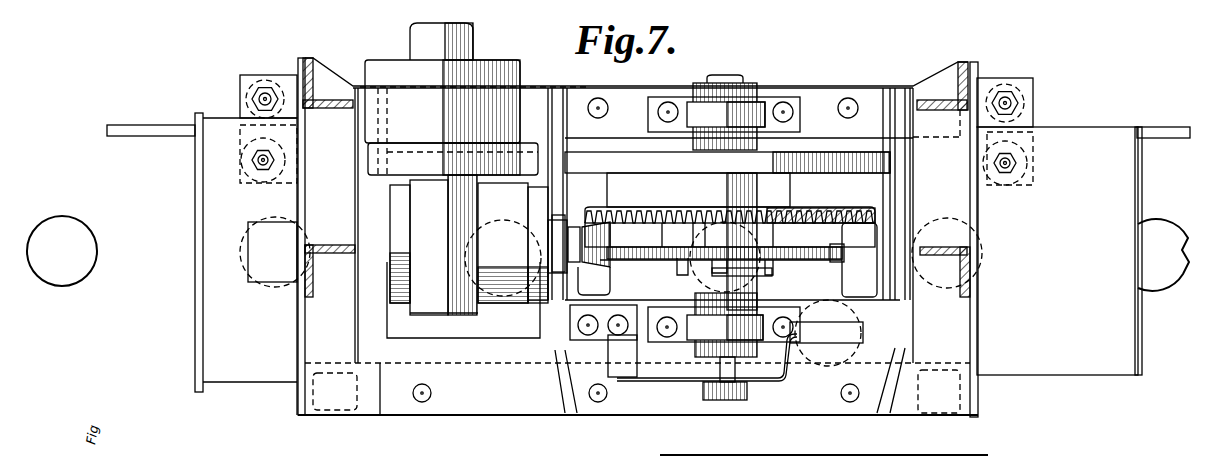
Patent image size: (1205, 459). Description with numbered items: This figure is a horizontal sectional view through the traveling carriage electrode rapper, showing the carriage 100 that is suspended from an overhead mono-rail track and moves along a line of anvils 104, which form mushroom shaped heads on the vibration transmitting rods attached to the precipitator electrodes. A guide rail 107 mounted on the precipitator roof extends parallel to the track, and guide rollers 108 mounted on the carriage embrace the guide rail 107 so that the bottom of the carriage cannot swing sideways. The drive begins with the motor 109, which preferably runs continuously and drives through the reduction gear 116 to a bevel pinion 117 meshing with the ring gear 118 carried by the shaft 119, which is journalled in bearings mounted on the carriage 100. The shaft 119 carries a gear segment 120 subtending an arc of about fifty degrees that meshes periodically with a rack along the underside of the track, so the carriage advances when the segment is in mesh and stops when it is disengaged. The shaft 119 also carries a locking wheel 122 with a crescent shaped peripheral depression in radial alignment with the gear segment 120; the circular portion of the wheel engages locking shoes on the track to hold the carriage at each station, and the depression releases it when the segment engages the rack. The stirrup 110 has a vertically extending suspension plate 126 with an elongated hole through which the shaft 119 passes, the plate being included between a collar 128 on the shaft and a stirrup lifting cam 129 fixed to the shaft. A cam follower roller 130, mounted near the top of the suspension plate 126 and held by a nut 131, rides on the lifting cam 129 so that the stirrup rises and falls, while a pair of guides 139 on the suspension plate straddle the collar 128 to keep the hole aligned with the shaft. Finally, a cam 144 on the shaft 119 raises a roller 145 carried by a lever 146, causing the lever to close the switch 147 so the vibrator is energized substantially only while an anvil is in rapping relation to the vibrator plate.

The carriage 100 is at (978, 391).
The anvil 104 is at (80, 236).
The guide rail 107 is at (130, 130).
The guide roller 108 is at (245, 162).
The motor 109 is at (480, 72).
The stirrup 110 is at (828, 287).
The reduction gear 116 is at (518, 213).
The bevel pinion 117 is at (583, 255).
The ring gear 118 is at (630, 210).
The shaft 119 is at (737, 78).
The gear segment 120 is at (673, 193).
The locking wheel 122 is at (797, 152).
The suspension plate 126 is at (832, 254).
The collar 128 is at (705, 275).
The stirrup lifting cam 129 is at (781, 241).
The roller 130 is at (732, 222).
The nut 131 is at (750, 272).
The guides 139 is at (682, 266).
The cam 144 is at (703, 390).
The roller 145 is at (727, 400).
The lever 146 is at (637, 381).
The switch 147 is at (810, 360).